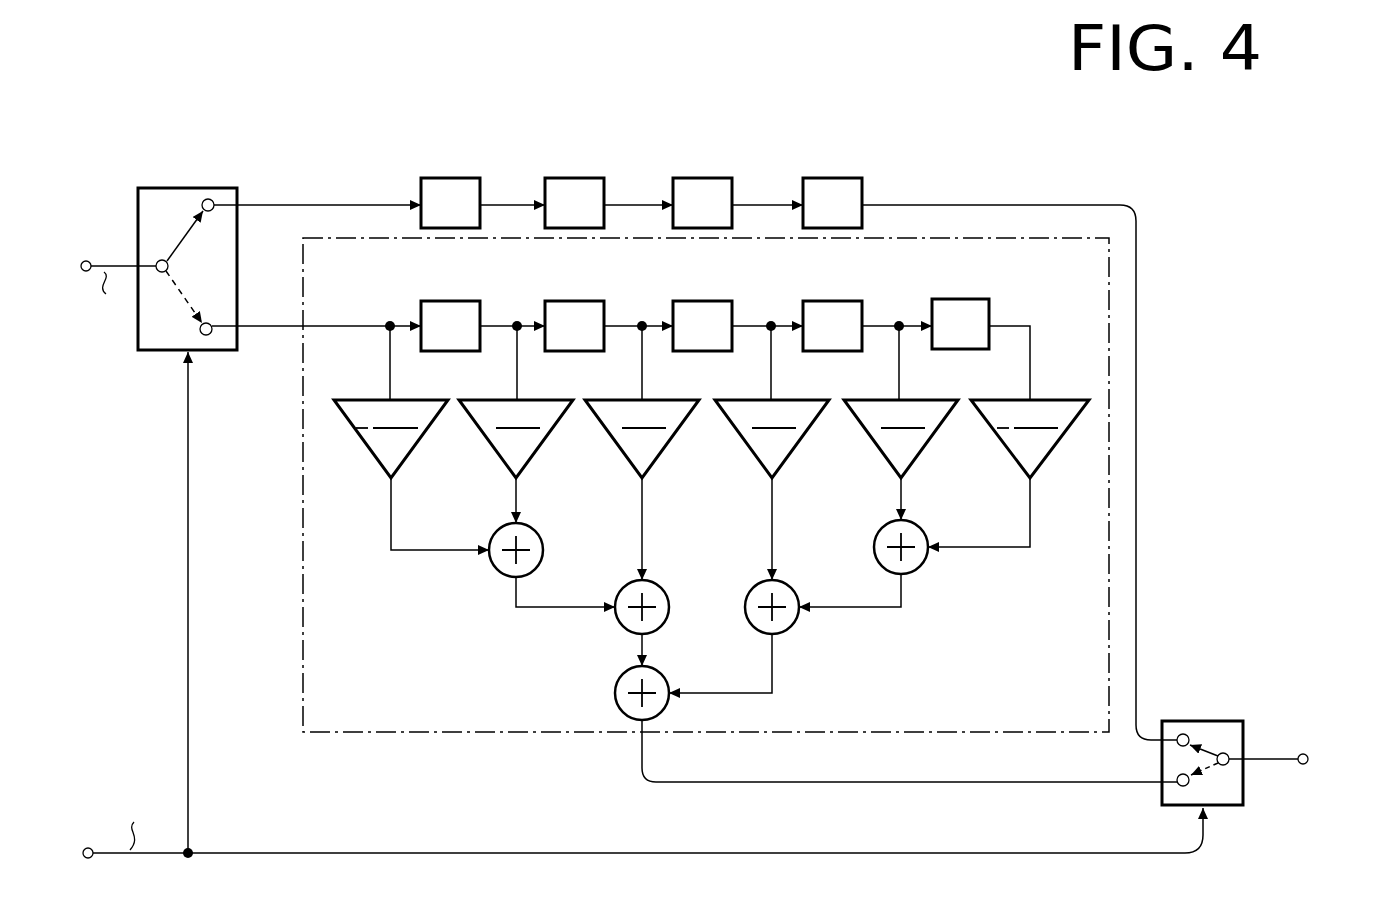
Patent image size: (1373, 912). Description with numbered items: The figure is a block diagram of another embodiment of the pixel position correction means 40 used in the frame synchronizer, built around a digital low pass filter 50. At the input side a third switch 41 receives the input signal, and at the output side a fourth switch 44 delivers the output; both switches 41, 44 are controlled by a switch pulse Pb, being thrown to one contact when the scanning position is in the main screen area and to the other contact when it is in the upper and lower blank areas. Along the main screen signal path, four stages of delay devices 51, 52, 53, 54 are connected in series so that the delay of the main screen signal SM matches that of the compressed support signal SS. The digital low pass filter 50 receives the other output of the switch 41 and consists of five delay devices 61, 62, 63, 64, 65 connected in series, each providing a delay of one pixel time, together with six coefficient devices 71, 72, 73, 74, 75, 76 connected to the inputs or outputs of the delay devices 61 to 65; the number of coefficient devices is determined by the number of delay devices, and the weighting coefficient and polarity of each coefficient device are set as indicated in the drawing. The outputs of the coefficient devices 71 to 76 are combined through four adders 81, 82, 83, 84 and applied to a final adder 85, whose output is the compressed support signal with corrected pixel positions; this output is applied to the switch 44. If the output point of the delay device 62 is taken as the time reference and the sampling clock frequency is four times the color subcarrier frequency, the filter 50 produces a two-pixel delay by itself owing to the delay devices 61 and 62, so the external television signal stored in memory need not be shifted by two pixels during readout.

The pixel position correction means 40 is at (392, 93).
The third switch 41 is at (182, 186).
The fourth switch 44 is at (1197, 720).
The digital low pass filter 50 is at (407, 735).
The delay device 51 is at (450, 178).
The delay device 52 is at (574, 178).
The delay device 53 is at (702, 178).
The delay device 54 is at (832, 178).
The delay device 61 is at (450, 301).
The delay device 62 is at (574, 301).
The delay device 63 is at (702, 301).
The delay device 64 is at (832, 301).
The delay device 65 is at (959, 299).
The coefficient device 71 is at (374, 442).
The coefficient device 72 is at (498, 442).
The coefficient device 73 is at (623, 442).
The coefficient device 74 is at (751, 442).
The coefficient device 75 is at (879, 442).
The coefficient device 76 is at (1008, 442).
The adder 81 is at (498, 569).
The adder 82 is at (920, 566).
The adder 83 is at (662, 590).
The adder 84 is at (792, 627).
The adder 85 is at (615, 693).